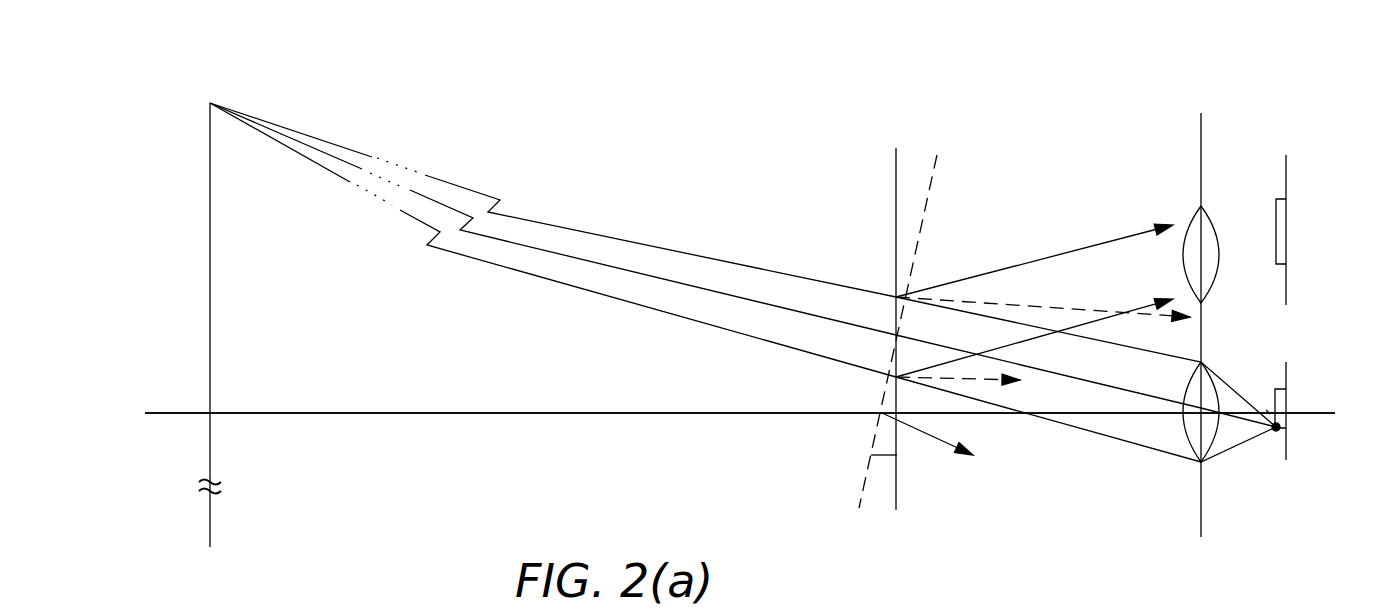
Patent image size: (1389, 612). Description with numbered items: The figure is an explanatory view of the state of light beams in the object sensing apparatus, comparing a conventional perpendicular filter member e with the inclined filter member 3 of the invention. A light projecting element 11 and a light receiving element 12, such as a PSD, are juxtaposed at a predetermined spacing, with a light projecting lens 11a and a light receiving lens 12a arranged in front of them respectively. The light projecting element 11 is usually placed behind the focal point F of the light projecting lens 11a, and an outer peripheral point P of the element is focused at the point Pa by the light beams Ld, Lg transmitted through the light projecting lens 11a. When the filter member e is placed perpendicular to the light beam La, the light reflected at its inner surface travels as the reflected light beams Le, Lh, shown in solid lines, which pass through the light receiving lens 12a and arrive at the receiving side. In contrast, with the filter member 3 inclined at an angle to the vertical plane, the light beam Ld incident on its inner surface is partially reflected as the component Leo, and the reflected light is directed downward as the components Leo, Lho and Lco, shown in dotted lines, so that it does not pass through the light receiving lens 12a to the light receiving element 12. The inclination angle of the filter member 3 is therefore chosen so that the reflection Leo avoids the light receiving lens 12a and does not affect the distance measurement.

The filter member 3 is at (935, 162).
The light projecting element 11 is at (1281, 400).
The light projecting lens 11a is at (1214, 456).
The light receiving element 12 is at (1286, 218).
The light receiving lens 12a is at (1217, 226).
The focus point of point P Pa is at (193, 319).
The light beam La is at (603, 414).
The light beam Ld is at (690, 254).
The light beam Lg is at (653, 308).
The reflected light beam Le is at (1023, 263).
The reflected light component Leo is at (1072, 308).
The reflected light beam Lh is at (1032, 337).
The reflected light component Lho is at (970, 380).
The reflected light component Lco is at (928, 438).
The filter member e is at (896, 170).
The focal point F is at (1268, 412).
The outer peripheral point P is at (1278, 433).